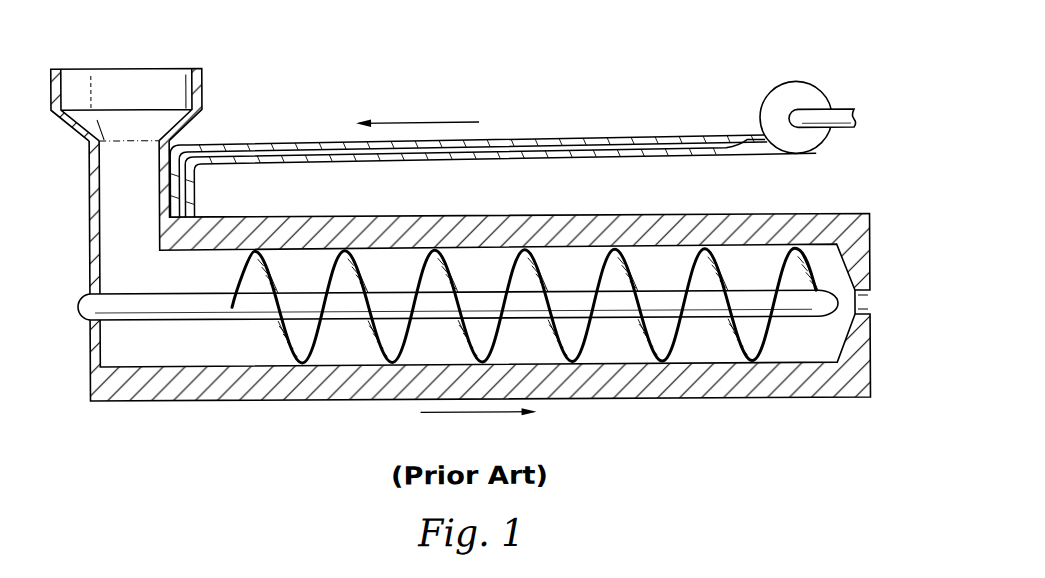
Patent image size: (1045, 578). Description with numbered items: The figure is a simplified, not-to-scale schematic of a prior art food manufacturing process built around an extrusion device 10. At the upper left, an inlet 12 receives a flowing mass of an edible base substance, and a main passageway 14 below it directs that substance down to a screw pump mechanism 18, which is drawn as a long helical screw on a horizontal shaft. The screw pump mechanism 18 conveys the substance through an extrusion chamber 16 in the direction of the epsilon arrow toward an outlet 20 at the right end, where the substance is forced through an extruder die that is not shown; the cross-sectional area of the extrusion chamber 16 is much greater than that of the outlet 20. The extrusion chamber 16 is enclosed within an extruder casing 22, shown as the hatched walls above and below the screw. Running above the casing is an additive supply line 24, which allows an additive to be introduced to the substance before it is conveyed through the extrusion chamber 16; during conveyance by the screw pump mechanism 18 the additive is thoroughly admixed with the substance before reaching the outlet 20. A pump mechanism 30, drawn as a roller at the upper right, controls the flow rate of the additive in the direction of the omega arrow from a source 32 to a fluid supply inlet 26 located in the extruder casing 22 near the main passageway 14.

The extrusion device 10 is at (498, 249).
The inlet 12 is at (140, 66).
The main passageway 14 is at (140, 206).
The extrusion chamber 16 is at (262, 350).
The screw pump mechanism 18 is at (380, 314).
The outlet 20 is at (872, 302).
The extruder casing 22 is at (610, 216).
The additive supply line 24 is at (478, 160).
The fluid supply inlet 26 is at (200, 209).
The pump mechanism 30 is at (797, 85).
The source 32 is at (858, 110).